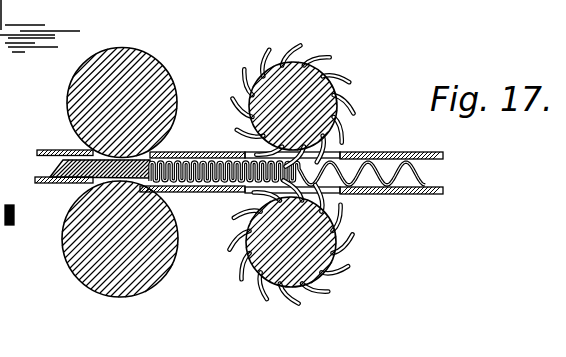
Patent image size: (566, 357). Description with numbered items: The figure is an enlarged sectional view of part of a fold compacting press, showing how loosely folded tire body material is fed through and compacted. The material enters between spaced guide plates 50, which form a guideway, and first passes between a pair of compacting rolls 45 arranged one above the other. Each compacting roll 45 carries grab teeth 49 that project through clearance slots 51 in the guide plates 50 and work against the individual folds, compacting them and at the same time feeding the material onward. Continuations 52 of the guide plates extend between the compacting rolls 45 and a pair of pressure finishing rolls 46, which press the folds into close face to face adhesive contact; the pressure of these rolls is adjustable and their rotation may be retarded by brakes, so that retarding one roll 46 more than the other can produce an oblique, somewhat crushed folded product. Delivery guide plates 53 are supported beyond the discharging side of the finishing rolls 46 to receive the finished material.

The compacting roll 45 is at (296, 68).
The pressure finishing roll 46 is at (162, 82).
The grab teeth 49 is at (336, 138).
The guide plate 50 is at (437, 157).
The clearance slot 51 is at (268, 146).
The continuation of the guide plates 52 is at (199, 152).
The delivery guide plate 53 is at (45, 182).